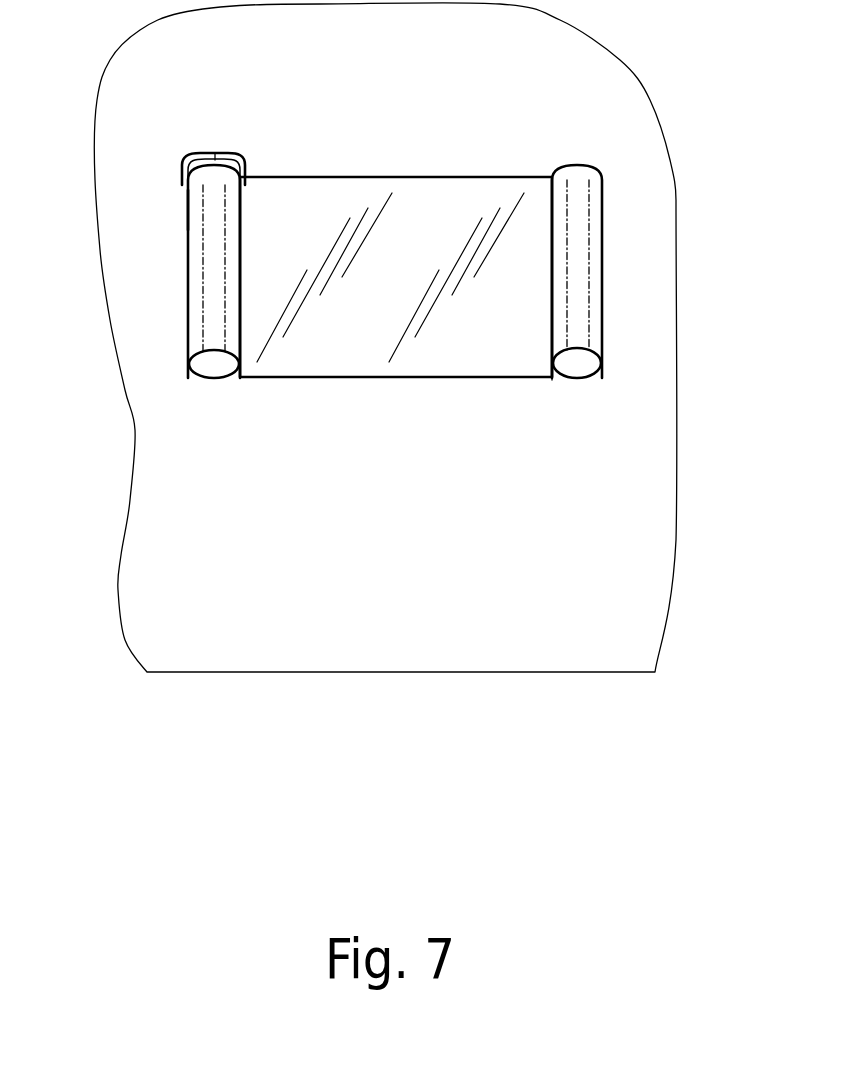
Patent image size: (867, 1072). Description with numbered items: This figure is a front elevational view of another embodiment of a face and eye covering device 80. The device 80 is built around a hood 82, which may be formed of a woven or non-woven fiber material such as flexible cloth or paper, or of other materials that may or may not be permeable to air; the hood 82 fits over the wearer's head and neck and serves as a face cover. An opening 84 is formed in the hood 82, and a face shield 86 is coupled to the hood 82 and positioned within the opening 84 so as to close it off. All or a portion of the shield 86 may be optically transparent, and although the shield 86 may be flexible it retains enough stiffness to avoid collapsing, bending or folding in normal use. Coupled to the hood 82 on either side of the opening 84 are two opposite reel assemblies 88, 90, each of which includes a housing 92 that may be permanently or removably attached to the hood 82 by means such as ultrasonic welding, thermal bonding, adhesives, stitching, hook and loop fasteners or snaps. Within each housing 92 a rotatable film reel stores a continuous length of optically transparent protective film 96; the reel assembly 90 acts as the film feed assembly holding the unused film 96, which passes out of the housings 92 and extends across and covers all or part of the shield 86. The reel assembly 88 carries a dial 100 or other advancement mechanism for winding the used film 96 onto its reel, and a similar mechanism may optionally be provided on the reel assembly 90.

The face and eye covering device 80 is at (613, 308).
The hood 82 is at (595, 575).
The opening 84 is at (365, 180).
The face shield 86 is at (488, 197).
The reel assembly 88 is at (194, 271).
The reel assembly 90 is at (583, 271).
The housing 92 is at (188, 215).
The protective film 96 is at (387, 377).
The dial 100 is at (223, 153).